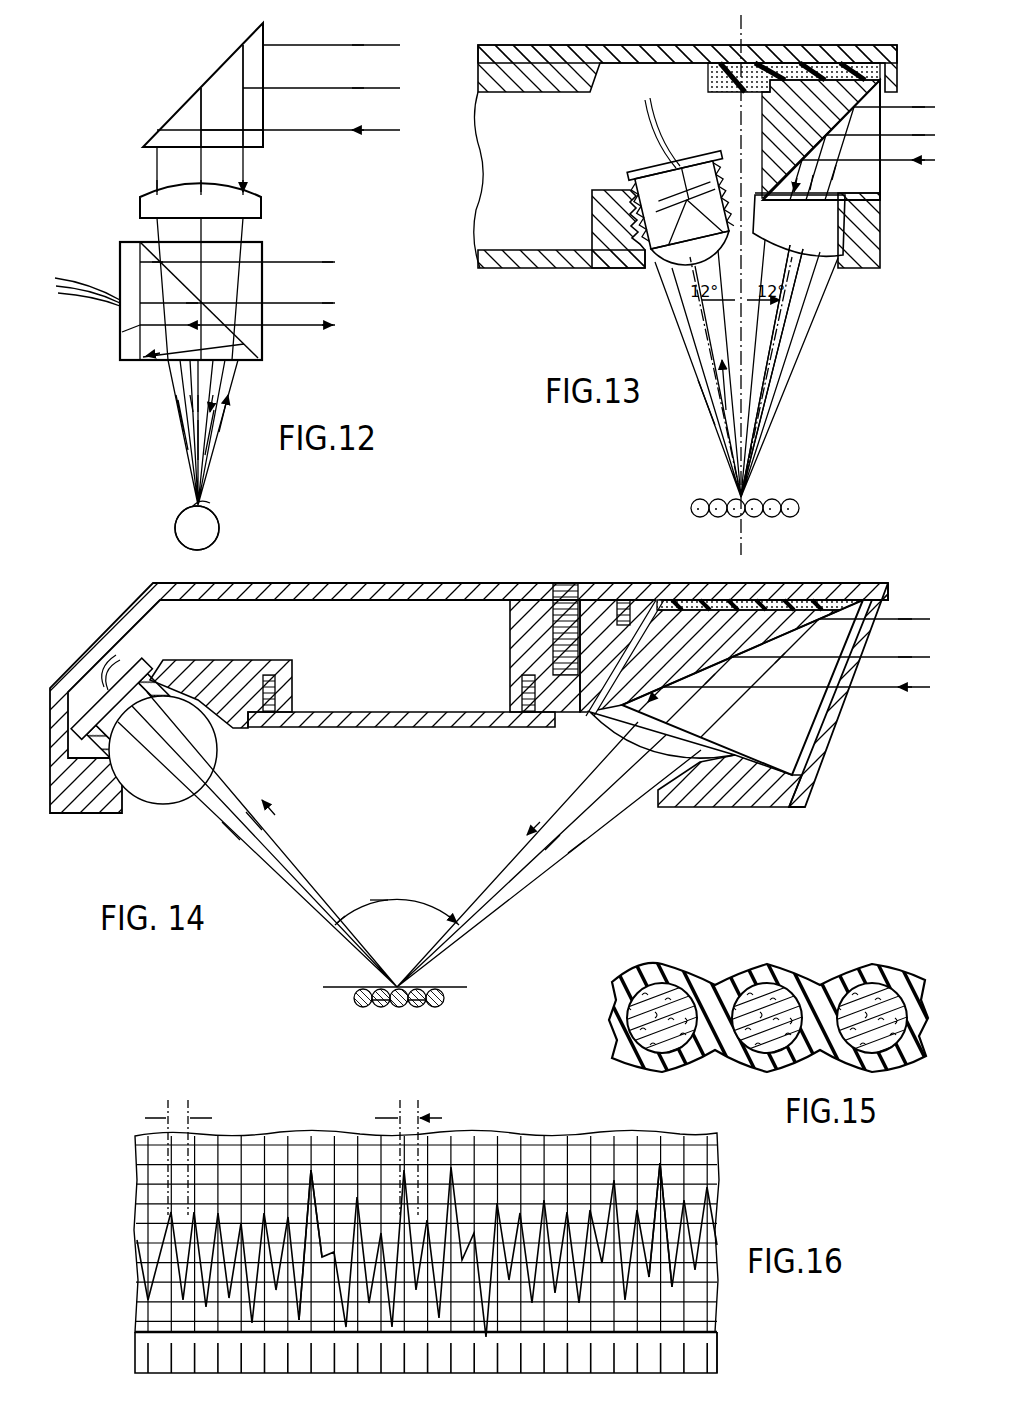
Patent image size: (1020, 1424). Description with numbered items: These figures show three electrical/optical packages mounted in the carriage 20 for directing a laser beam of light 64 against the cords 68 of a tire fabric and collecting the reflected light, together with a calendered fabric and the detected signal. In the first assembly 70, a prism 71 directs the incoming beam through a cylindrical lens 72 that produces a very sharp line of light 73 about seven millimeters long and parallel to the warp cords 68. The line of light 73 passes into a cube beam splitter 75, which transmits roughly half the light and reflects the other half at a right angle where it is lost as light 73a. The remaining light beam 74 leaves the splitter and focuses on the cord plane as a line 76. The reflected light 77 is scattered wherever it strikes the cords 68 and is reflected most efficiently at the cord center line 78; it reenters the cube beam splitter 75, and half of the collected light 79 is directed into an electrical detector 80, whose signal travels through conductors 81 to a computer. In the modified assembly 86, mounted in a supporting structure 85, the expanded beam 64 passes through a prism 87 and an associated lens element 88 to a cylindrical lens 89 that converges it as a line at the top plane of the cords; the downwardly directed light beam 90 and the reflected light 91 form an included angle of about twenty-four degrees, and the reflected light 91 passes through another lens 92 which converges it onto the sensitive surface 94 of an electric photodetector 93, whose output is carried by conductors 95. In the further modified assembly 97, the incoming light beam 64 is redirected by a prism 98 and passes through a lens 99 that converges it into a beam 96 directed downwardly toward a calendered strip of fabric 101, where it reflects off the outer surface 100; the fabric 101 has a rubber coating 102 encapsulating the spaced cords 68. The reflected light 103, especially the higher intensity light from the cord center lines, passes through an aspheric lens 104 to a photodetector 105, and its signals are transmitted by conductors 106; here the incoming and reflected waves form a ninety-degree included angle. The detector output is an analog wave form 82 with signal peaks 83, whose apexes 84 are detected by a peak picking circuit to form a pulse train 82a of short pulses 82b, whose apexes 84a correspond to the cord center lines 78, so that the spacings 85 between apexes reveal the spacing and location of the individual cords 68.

In FIG. 13, the carriage 20 is at (505, 100).
In FIG. 14, the carriage 20 is at (372, 582).
In FIG. 13, the beam of light 64 is at (930, 98).
In FIG. 14, the beam of light 64 is at (866, 674).
In FIG. 12, the cords 68 is at (221, 527).
In FIG. 13, the cords 68 is at (790, 500).
In FIG. 14, the cords 68 is at (353, 998).
In FIG. 15, the cords 68 is at (642, 1018).
In FIG. 12, the electrical/optical assembly 70 is at (106, 194).
In FIG. 12, the prism 71 is at (232, 70).
In FIG. 12, the cylindrical lens 72 is at (255, 193).
In FIG. 12, the line of light 73 is at (236, 228).
In FIG. 12, the reflected lost light 73a is at (303, 264).
In FIG. 12, the remaining light beam 74 is at (222, 376).
In FIG. 12, the cube beam splitter 75 is at (248, 287).
In FIG. 12, the focused line 76 is at (205, 503).
In FIG. 12, the reflected light 77 is at (174, 420).
In FIG. 12, the cord center line 78 is at (178, 521).
In FIG. 12, the collected light 79 is at (142, 350).
In FIG. 12, the electrical detector 80 is at (195, 290).
In FIG. 12, the conductors 81 is at (76, 300).
In FIG. 16, the analog wave form 82 is at (421, 1190).
In FIG. 16, the pulse train 82a is at (204, 1352).
In FIG. 16, the short pulses 82b is at (146, 1366).
In FIG. 16, the signal peaks 83 is at (304, 1195).
In FIG. 16, the apexes 84 is at (309, 1172).
In FIG. 16, the pulse apexes 84a is at (716, 1343).
In FIG. 13, the spacings 85 is at (666, 45).
In FIG. 16, the spacings 85 is at (177, 1112).
In FIG. 13, the modified electric/optical assembly 86 is at (604, 316).
In FIG. 13, the prism 87 is at (862, 175).
In FIG. 13, the lens 88 is at (832, 236).
In FIG. 13, the cylindrical lens 89 is at (830, 268).
In FIG. 13, the downwardly directed light beam 90 is at (780, 397).
In FIG. 13, the reflected light 91 is at (706, 413).
In FIG. 13, the lens 92 is at (676, 268).
In FIG. 13, the electric photodetector 93 is at (684, 227).
In FIG. 13, the sensitive surface 94 is at (697, 168).
In FIG. 13, the conductors 95 is at (659, 122).
In FIG. 14, the converged beam 96 is at (508, 857).
In FIG. 14, the further modified electrical/optical assembly 97 is at (556, 854).
In FIG. 14, the prism 98 is at (766, 603).
In FIG. 14, the lens 99 is at (655, 768).
In FIG. 14, the outer surface 100 is at (362, 982).
In FIG. 15, the outer surface 100 is at (765, 1013).
In FIG. 14, the calendered strip of fabric 101 is at (375, 1020).
In FIG. 14, the rubber coating 102 is at (418, 1008).
In FIG. 15, the rubber coating 102 is at (703, 992).
In FIG. 14, the reflected light 103 is at (288, 844).
In FIG. 14, the aspheric lens 104 is at (139, 735).
In FIG. 14, the photodetector 105 is at (128, 682).
In FIG. 14, the conductors 106 is at (110, 672).